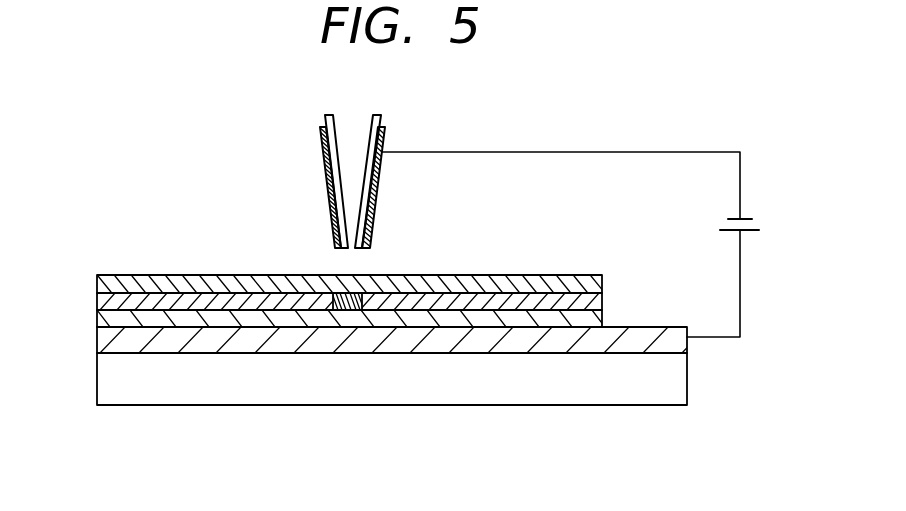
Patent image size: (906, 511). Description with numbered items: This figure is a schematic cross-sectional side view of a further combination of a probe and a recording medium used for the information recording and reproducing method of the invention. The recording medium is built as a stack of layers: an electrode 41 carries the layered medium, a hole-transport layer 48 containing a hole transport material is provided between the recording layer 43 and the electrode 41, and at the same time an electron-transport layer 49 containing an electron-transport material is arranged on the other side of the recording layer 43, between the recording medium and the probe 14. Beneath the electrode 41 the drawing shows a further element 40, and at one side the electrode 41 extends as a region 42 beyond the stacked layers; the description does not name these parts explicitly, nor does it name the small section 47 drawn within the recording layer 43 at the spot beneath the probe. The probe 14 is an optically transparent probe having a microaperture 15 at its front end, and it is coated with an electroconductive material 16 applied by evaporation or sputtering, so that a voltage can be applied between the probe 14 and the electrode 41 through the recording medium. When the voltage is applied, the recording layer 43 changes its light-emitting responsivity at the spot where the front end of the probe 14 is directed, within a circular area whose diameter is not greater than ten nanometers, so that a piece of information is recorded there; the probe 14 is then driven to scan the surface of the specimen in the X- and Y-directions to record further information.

The probe 14 is at (327, 162).
The microaperture 15 is at (353, 250).
The electroconductive material 16 is at (330, 172).
The substrate 40 is at (100, 380).
The electrode 41 is at (100, 340).
The exposed electrode region 42 is at (680, 315).
The recording layer 43 is at (100, 302).
The recorded bit 47 is at (375, 308).
The hole-transport layer 48 is at (100, 320).
The electron-transport layer 49 is at (113, 279).